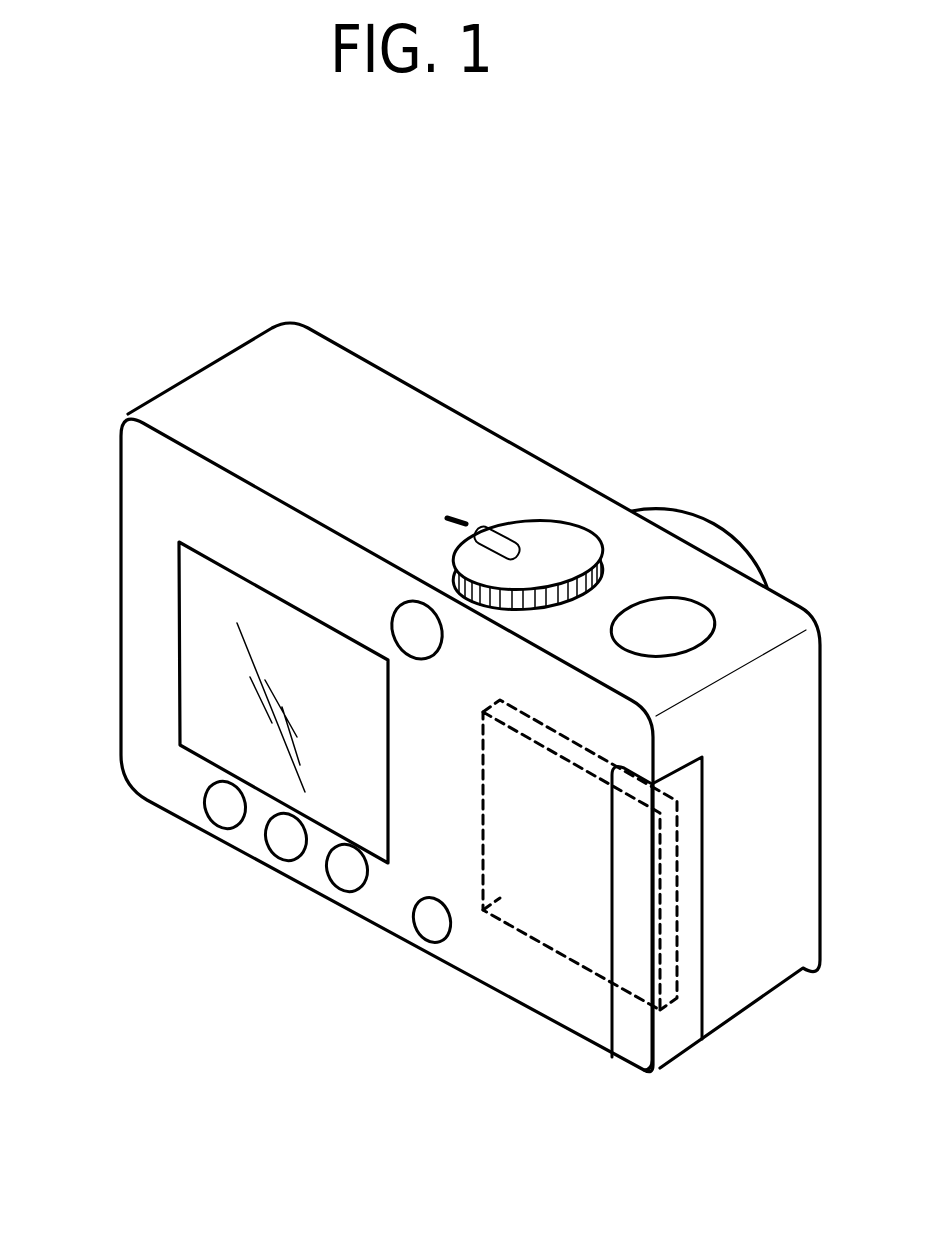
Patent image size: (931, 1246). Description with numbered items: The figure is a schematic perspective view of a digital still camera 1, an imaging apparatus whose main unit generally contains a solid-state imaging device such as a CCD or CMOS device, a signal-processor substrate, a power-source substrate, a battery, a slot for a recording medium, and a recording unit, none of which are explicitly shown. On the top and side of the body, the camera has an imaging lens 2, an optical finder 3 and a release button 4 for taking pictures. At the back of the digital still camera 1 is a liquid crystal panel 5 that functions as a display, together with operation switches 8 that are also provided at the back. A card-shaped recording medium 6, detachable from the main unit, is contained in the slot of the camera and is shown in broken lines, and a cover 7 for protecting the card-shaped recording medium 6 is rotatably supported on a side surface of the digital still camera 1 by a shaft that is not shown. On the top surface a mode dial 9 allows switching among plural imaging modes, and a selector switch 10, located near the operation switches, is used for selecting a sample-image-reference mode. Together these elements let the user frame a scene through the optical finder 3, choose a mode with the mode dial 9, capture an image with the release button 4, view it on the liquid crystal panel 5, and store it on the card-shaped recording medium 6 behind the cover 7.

The digital still camera 1 is at (230, 390).
The imaging lens 2 is at (702, 533).
The optical finder 3 is at (413, 617).
The release button 4 is at (685, 635).
The liquid crystal panel 5 is at (198, 632).
The card-shaped recording medium 6 is at (560, 920).
The cover 7 is at (632, 1055).
The operation switches 8 is at (197, 830).
The mode dial 9 is at (549, 536).
The selector switch 10 is at (432, 930).